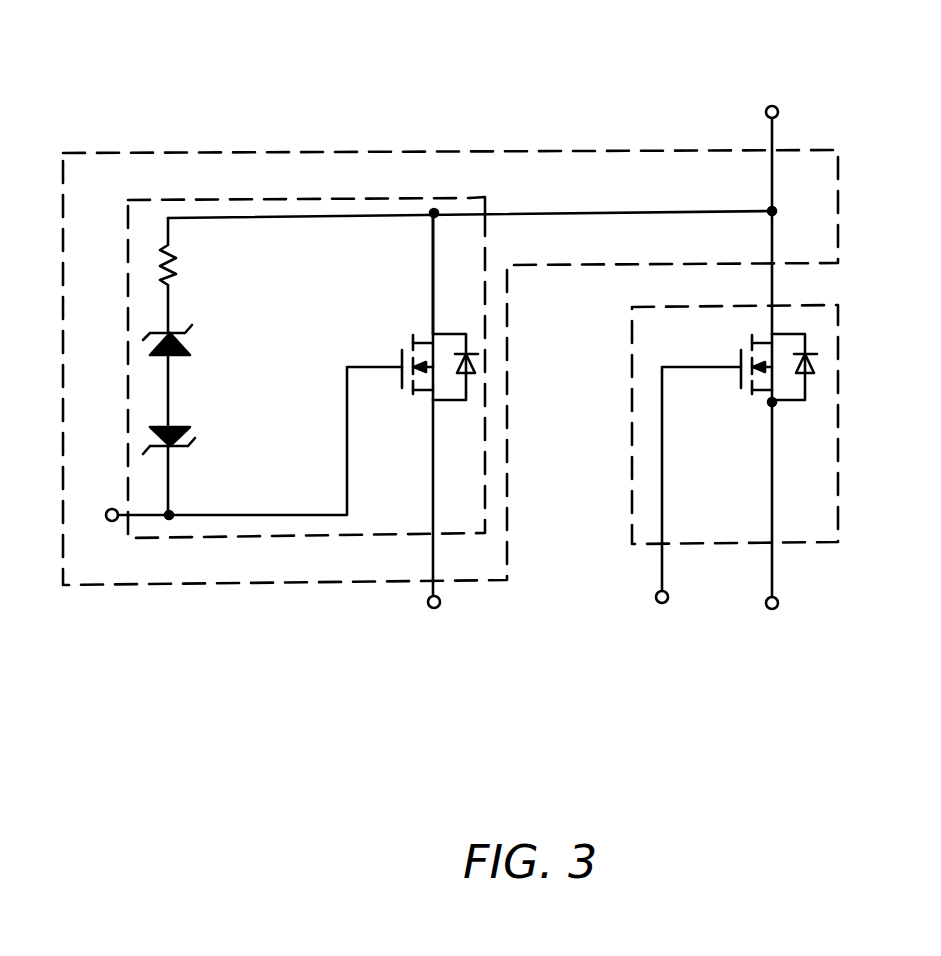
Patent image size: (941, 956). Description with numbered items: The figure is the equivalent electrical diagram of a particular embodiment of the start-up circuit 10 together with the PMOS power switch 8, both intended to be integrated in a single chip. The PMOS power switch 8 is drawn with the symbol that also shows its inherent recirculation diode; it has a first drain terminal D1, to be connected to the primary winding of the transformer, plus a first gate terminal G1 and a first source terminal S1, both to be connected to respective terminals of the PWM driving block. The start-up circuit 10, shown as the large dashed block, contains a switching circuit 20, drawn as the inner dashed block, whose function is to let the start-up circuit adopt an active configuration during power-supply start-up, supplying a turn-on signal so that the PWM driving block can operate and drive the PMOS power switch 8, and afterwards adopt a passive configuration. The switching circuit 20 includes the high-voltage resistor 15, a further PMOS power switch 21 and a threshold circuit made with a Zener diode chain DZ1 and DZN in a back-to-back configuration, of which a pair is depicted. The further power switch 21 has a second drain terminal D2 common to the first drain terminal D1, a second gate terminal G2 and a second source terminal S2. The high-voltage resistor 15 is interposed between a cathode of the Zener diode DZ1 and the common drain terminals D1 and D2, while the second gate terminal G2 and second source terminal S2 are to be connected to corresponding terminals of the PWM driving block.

The start-up circuit 10 is at (155, 154).
The switching circuit 20 is at (485, 197).
The high-voltage resistor 15 is at (172, 246).
The further PMOS power switch 21 is at (414, 324).
The PMOS power switch 8 is at (838, 367).
The Zener diode DZ1 is at (190, 345).
The Zener diode DZN is at (190, 424).
The first drain terminal D1 is at (504, 209).
The second drain terminal D2 is at (432, 262).
The first gate terminal G1 is at (698, 503).
The second gate terminal G2 is at (242, 466).
The first source terminal S1 is at (796, 520).
The second source terminal S2 is at (455, 523).